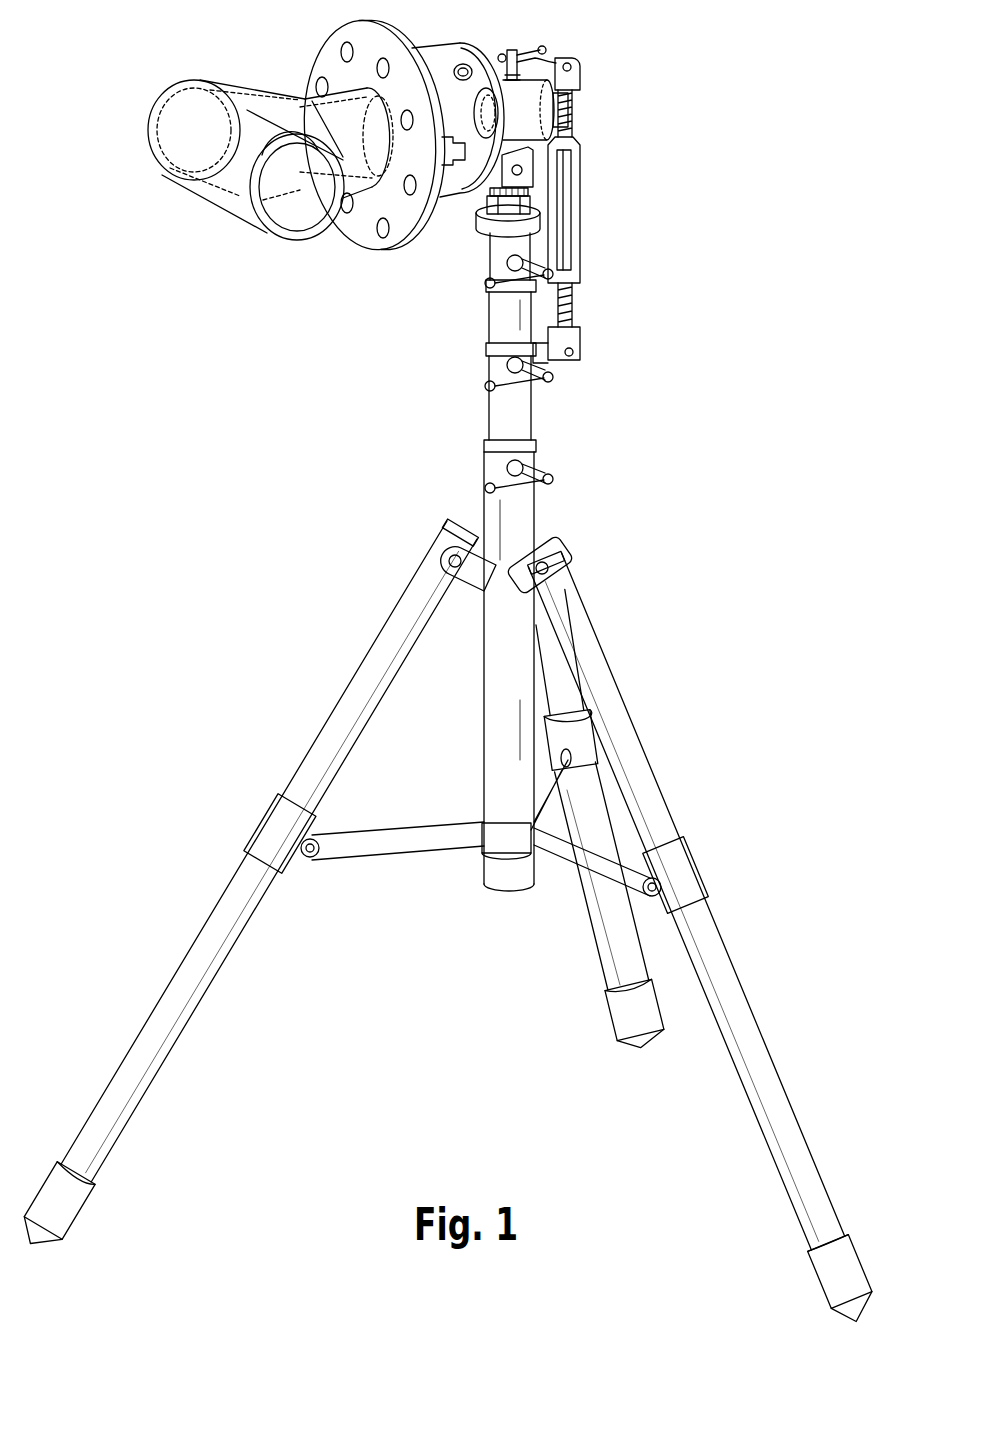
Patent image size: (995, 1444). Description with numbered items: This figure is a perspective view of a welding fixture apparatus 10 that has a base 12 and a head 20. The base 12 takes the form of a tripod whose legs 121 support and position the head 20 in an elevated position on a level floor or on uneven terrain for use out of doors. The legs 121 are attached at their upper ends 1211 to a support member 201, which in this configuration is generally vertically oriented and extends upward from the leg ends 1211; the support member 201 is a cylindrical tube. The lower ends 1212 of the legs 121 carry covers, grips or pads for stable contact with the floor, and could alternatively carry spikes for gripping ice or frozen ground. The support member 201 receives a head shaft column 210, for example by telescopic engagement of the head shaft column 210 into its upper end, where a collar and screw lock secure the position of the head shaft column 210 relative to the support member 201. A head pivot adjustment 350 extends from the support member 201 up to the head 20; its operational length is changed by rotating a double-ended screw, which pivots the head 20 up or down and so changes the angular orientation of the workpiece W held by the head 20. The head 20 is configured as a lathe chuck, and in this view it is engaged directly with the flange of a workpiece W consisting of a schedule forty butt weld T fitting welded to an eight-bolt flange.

The workpiece W is at (178, 80).
The head 20 is at (478, 33).
The welding fixture apparatus 10 is at (678, 103).
The head pivot adjustment 350 is at (590, 208).
The support member 201 is at (460, 539).
The head shaft column 210 is at (510, 318).
The base 12 is at (228, 830).
The legs 121 is at (608, 917).
The upper ends 1211 is at (440, 548).
The lower ends 1212 is at (72, 1200).